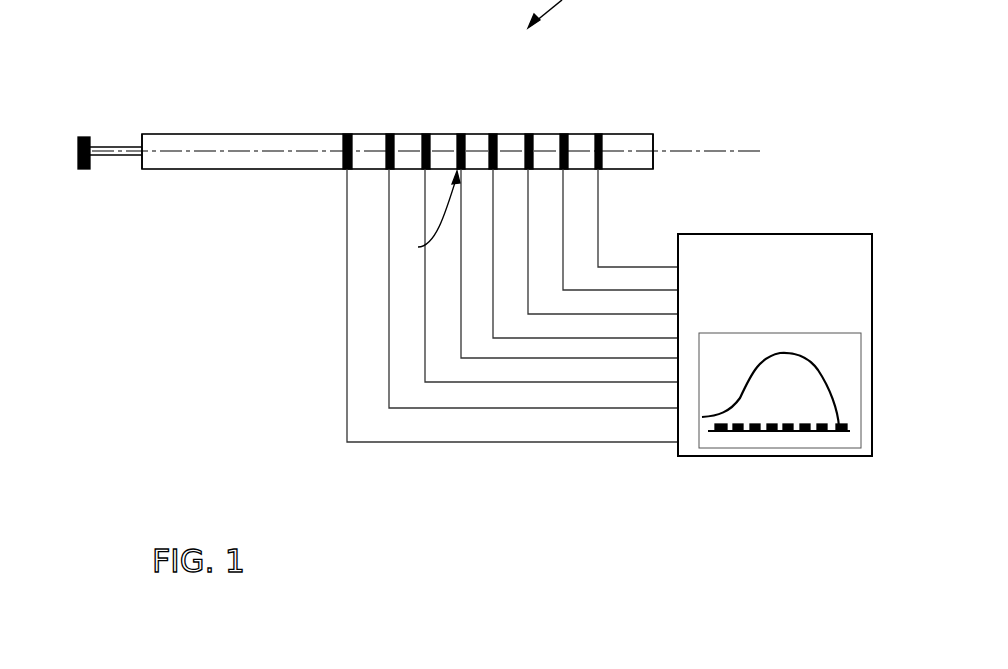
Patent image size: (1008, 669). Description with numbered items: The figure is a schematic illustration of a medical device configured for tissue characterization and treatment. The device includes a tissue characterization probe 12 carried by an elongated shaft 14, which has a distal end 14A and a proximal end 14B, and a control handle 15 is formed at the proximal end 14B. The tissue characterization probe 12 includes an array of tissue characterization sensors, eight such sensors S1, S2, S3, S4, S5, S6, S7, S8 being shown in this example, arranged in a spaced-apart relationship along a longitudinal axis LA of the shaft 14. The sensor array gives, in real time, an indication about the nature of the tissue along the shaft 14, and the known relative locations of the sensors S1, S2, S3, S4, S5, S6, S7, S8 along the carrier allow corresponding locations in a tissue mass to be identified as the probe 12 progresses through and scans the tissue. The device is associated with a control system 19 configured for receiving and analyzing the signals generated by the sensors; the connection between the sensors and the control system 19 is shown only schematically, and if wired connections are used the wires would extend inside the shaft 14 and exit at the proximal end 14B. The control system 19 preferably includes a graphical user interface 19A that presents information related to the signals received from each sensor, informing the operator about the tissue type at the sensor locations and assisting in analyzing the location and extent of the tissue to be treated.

The tissue characterization probe 12 is at (426, 216).
The elongated shaft 14 is at (267, 170).
The distal end 14A is at (653, 140).
The proximal end 14B is at (142, 137).
The control handle 15 is at (79, 151).
The control system 19 is at (829, 234).
The graphical user interface 19A is at (786, 448).
The longitudinal axis LA is at (730, 152).
The tissue characterization sensor S1 is at (601, 134).
The tissue characterization sensor S2 is at (565, 134).
The tissue characterization sensor S3 is at (530, 134).
The tissue characterization sensor S4 is at (494, 134).
The tissue characterization sensor S5 is at (463, 134).
The tissue characterization sensor S6 is at (427, 134).
The tissue characterization sensor S7 is at (389, 134).
The tissue characterization sensor S8 is at (347, 134).